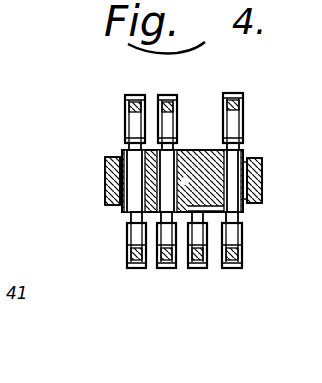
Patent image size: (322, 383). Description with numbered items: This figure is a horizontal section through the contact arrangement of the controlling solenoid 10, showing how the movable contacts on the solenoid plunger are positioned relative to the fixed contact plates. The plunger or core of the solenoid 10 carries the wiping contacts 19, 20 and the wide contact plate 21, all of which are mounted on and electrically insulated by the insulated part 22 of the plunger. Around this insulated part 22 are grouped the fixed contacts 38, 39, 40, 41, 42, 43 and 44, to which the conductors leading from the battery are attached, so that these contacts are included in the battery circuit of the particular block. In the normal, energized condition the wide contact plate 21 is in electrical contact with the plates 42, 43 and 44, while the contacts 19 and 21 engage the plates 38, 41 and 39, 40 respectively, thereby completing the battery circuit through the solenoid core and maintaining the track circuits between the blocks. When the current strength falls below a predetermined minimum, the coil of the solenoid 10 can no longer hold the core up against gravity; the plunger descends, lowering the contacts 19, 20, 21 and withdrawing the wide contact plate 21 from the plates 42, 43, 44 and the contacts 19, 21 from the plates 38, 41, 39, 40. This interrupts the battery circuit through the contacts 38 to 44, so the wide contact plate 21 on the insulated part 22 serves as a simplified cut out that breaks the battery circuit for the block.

The controlling solenoid 10 is at (152, 181).
The wiping contact 19 is at (178, 152).
The wiping contact 20 is at (121, 161).
The wide contact plate 21 is at (250, 160).
The insulated part 22 is at (230, 182).
The contact 38 is at (169, 269).
The contact 39 is at (131, 240).
The contact 40 is at (128, 125).
The contact 41 is at (178, 113).
The contact plate 42 is at (204, 269).
The contact plate 43 is at (241, 233).
The contact plate 44 is at (243, 118).